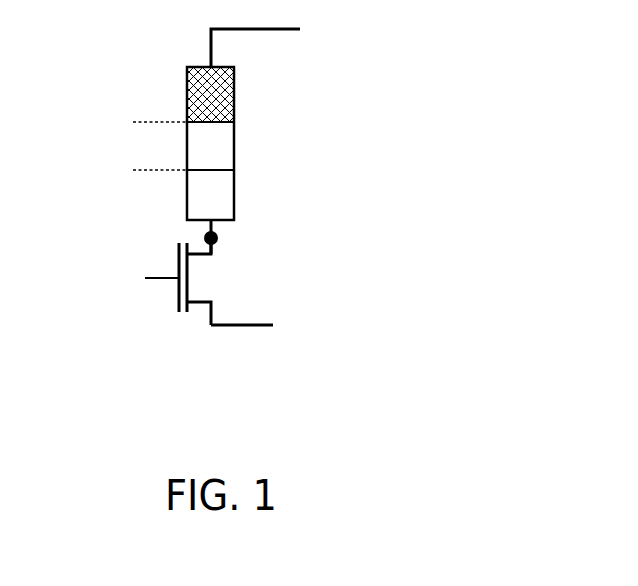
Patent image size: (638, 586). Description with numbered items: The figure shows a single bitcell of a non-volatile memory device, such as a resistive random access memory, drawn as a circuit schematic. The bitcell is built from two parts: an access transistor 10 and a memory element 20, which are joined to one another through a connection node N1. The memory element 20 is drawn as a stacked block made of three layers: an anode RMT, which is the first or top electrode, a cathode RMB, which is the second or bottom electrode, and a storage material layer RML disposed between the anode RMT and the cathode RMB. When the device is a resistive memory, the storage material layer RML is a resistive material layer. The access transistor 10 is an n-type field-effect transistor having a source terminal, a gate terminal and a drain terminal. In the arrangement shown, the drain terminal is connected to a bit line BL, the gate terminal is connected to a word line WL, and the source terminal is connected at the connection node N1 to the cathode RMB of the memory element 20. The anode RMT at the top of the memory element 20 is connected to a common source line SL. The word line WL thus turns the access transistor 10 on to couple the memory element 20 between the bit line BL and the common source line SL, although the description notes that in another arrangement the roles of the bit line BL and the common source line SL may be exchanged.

The access transistor 10 is at (193, 221).
The memory element 20 is at (207, 144).
The connection node N1 is at (217, 242).
The common source line SL is at (277, 42).
The bit line BL is at (263, 328).
The word line WL is at (136, 280).
The anode RMT is at (145, 102).
The storage material layer RML is at (145, 151).
The cathode RMB is at (129, 198).